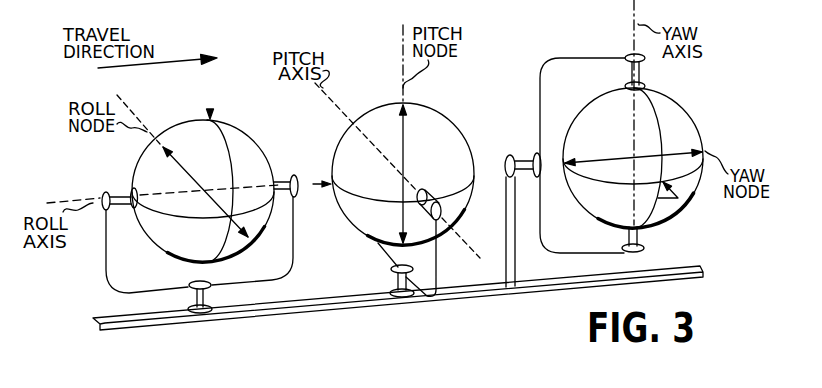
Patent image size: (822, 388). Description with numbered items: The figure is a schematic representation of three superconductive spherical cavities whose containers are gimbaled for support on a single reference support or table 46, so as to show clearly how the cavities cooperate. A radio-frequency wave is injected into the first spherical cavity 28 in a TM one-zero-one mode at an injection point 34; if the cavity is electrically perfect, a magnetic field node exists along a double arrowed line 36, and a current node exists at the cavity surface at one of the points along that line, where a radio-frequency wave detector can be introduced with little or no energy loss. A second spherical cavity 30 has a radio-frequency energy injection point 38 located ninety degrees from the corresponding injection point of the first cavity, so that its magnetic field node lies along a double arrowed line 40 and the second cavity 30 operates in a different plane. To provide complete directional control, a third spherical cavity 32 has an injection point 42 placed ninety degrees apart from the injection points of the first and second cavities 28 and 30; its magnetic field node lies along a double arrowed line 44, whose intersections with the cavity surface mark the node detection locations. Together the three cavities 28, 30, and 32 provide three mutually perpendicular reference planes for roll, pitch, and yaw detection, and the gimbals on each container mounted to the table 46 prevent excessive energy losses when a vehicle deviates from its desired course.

The first spherical cavity 28 is at (477, 112).
The second spherical cavity 30 is at (278, 137).
The third spherical cavity 32 is at (718, 102).
The injection point 34 is at (313, 205).
The double arrowed line 36 is at (405, 111).
The radio-frequency energy injection point 38 is at (187, 92).
The double arrowed line 40 is at (219, 206).
The injection point 42 is at (678, 198).
The double arrowed line 44 is at (668, 152).
The reference support or table 46 is at (700, 266).